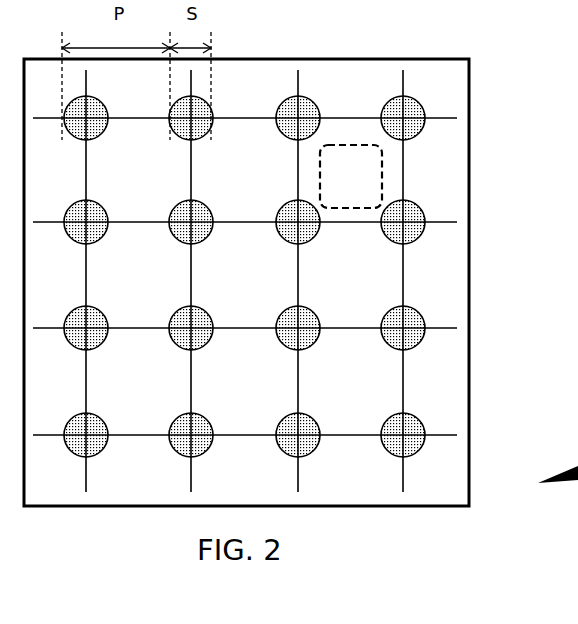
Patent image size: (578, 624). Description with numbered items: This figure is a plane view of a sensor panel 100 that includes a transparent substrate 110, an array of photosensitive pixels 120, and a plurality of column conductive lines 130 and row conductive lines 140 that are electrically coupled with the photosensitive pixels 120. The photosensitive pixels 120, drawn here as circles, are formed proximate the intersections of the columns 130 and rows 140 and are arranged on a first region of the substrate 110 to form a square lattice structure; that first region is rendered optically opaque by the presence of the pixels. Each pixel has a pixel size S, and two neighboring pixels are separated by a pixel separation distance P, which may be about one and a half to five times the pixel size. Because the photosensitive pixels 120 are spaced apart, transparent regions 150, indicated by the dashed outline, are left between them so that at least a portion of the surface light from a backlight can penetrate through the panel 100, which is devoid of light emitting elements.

The sensor panel 100 is at (290, 289).
The transparent substrate 110 is at (445, 272).
The photosensitive pixels 120 is at (307, 94).
The column conductive lines 130 is at (408, 382).
The row conductive lines 140 is at (345, 445).
The transparent regions 150 is at (380, 178).